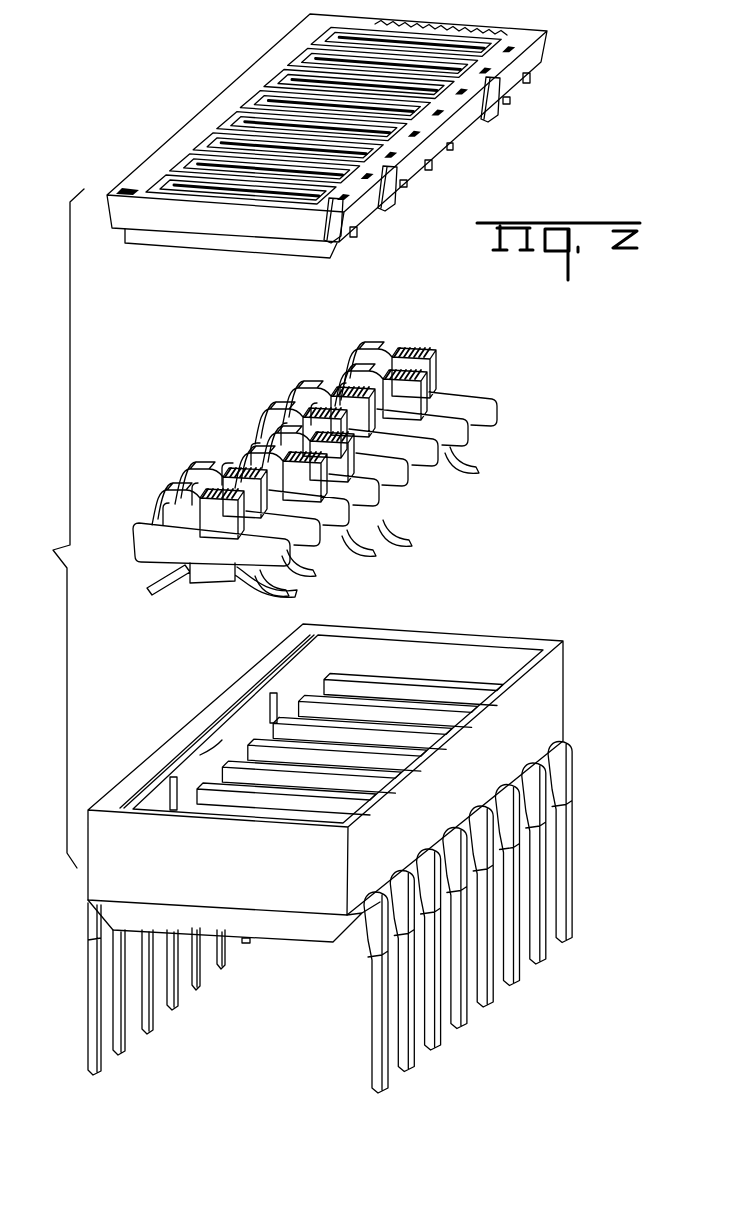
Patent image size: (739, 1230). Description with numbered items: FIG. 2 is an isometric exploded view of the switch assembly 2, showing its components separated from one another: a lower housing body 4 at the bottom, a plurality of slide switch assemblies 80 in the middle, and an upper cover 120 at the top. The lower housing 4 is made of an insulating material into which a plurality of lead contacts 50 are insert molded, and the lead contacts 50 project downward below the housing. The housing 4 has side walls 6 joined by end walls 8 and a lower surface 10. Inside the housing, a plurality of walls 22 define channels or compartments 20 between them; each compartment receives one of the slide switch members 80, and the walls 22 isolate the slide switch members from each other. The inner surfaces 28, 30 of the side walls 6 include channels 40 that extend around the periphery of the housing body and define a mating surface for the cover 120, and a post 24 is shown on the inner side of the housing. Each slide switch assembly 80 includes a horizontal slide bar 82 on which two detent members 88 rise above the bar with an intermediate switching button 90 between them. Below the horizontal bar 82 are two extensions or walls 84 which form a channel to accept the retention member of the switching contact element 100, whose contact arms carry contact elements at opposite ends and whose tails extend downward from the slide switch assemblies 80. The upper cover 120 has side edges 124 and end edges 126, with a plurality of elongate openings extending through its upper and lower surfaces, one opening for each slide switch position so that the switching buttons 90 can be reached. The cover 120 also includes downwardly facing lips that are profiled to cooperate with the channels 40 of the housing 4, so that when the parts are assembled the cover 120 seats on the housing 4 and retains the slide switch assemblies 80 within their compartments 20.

The electrical connector 2 is at (56, 528).
The lower housing body 4 is at (356, 836).
The side walls 6 is at (88, 830).
The end walls 8 is at (226, 864).
The lower surface 10 is at (303, 945).
The channels or compartments 20 is at (398, 701).
The walls 22 is at (307, 703).
The post 24 is at (193, 793).
The inner surface of side wall 28 is at (227, 743).
The inner surface of side wall 30 is at (493, 680).
The channels 40 is at (356, 649).
The lead contacts 50 is at (563, 866).
The slide switch assembly 80 is at (327, 463).
The horizontal slide bar 82 is at (133, 540).
The extensions or walls 84 is at (213, 577).
The detent members 88 is at (418, 360).
The switching button 90 is at (395, 340).
The switching contact element 100 is at (473, 470).
The upper cover 120 is at (367, 154).
The side edges 124 is at (207, 115).
The end edges 126 is at (207, 220).